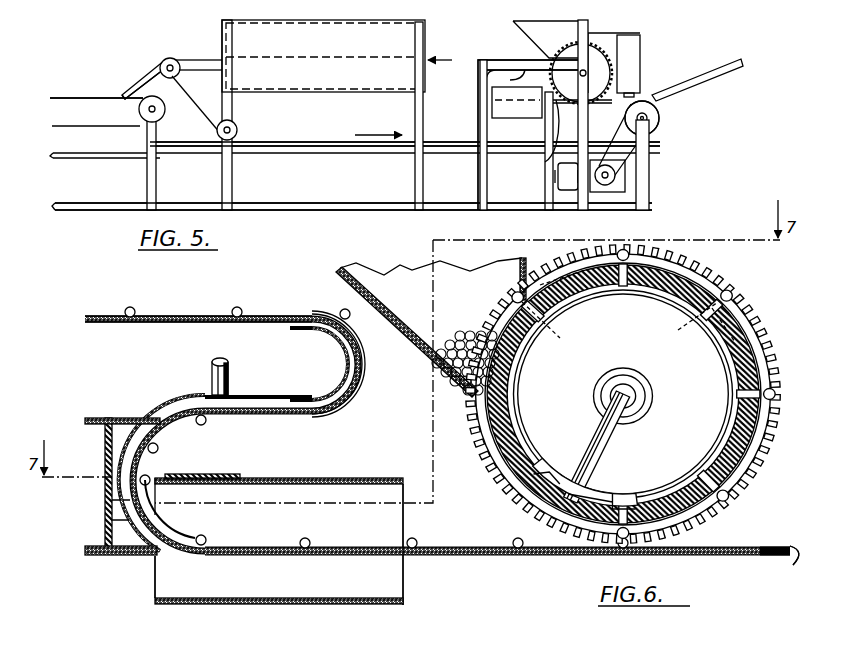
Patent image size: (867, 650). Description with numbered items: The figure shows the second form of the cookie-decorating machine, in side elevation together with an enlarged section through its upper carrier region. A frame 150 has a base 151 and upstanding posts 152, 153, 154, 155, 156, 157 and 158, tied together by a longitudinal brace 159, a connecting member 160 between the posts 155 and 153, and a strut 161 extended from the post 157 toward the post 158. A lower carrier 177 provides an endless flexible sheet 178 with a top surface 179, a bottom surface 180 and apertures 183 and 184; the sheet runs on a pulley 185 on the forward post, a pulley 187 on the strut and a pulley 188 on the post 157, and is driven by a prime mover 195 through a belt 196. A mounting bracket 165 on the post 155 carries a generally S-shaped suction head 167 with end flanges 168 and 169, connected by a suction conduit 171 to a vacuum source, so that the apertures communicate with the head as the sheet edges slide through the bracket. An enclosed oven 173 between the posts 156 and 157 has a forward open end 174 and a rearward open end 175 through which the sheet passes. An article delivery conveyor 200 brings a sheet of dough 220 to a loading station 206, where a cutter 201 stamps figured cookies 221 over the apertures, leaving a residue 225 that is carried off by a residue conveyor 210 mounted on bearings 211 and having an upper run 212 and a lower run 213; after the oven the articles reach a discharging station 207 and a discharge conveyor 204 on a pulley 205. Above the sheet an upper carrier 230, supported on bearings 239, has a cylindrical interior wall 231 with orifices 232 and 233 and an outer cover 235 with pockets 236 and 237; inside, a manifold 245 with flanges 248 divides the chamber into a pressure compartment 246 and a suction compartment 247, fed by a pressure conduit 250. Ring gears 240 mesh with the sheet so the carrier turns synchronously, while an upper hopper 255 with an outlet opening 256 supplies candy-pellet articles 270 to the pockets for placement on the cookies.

In FIG. 5, the frame 150 is at (332, 212).
In FIG. 5, the base 151 is at (388, 204).
In FIG. 5, the post 152 is at (650, 187).
In FIG. 5, the post 153 is at (582, 206).
In FIG. 5, the post 154 is at (549, 211).
In FIG. 5, the post 155 is at (483, 211).
In FIG. 5, the post 156 is at (424, 181).
In FIG. 5, the post 157 is at (234, 183).
In FIG. 5, the post 158 is at (156, 186).
In FIG. 5, the longitudinal brace 159 is at (320, 150).
In FIG. 5, the connecting member 160 is at (490, 62).
In FIG. 5, the strut 161 is at (200, 62).
In FIG. 6, the mounting bracket 165 is at (105, 445).
In FIG. 6, the suction head 167 is at (185, 395).
In FIG. 6, the end flange 168 is at (148, 527).
In FIG. 6, the end flange 169 is at (332, 326).
In FIG. 6, the suction conduit 171 is at (212, 372).
In FIG. 5, the oven 173 is at (305, 70).
In FIG. 5, the forward open end 174 is at (425, 38).
In FIG. 5, the rearward open end 175 is at (224, 78).
In FIG. 5, the lower carrier 177 is at (662, 129).
In FIG. 6, the lower carrier 177 is at (460, 560).
In FIG. 5, the endless flexible sheet 178 is at (556, 150).
In FIG. 6, the endless flexible sheet 178 is at (114, 325).
In FIG. 6, the top surface 179 is at (85, 318).
In FIG. 6, the bottom surface 180 is at (85, 323).
In FIG. 6, the aperture 183 is at (238, 325).
In FIG. 6, the aperture 184 is at (205, 326).
In FIG. 5, the pulley 185 is at (662, 117).
In FIG. 5, the pulley 187 is at (165, 62).
In FIG. 5, the pulley 188 is at (240, 130).
In FIG. 6, the pulley 188 is at (310, 555).
In FIG. 5, the prime mover 195 is at (616, 198).
In FIG. 5, the belt 196 is at (630, 166).
In FIG. 5, the article delivery conveyor 200 is at (715, 68).
In FIG. 5, the cutter 201 is at (632, 48).
In FIG. 5, the discharge conveyor 204 is at (72, 97).
In FIG. 5, the pulley 205 is at (160, 118).
In FIG. 5, the loading station 206 is at (671, 66).
In FIG. 5, the discharging station 207 is at (115, 80).
In FIG. 5, the residue conveyor 210 is at (500, 123).
In FIG. 6, the residue conveyor 210 is at (395, 476).
In FIG. 5, the bearing 211 is at (492, 100).
In FIG. 6, the upper run 212 is at (342, 478).
In FIG. 6, the lower run 213 is at (340, 605).
In FIG. 6, the sheet of dough 220 is at (748, 546).
In FIG. 6, the figured cookie 221 is at (214, 310).
In FIG. 6, the residue 225 is at (212, 476).
In FIG. 5, the upper carrier 230 is at (626, 102).
In FIG. 6, the upper carrier 230 is at (740, 302).
In FIG. 6, the cylindrical interior wall 231 is at (665, 270).
In FIG. 6, the orifice 232 is at (620, 270).
In FIG. 6, the orifice 233 is at (553, 316).
In FIG. 6, the outer cover 235 is at (700, 290).
In FIG. 6, the pocket 236 is at (612, 270).
In FIG. 6, the pocket 237 is at (548, 290).
In FIG. 6, the bearing 239 is at (705, 378).
In FIG. 5, the ring gear 240 is at (592, 48).
In FIG. 6, the ring gear 240 is at (757, 318).
In FIG. 6, the manifold 245 is at (603, 498).
In FIG. 6, the pressure compartment 246 is at (552, 478).
In FIG. 6, the suction compartment 247 is at (735, 470).
In FIG. 6, the flange 248 is at (500, 418).
In FIG. 6, the pressure conduit 250 is at (614, 440).
In FIG. 5, the upper hopper 255 is at (568, 45).
In FIG. 6, the upper hopper 255 is at (340, 296).
In FIG. 6, the outlet opening 256 is at (522, 298).
In FIG. 6, the article 270 is at (235, 306).